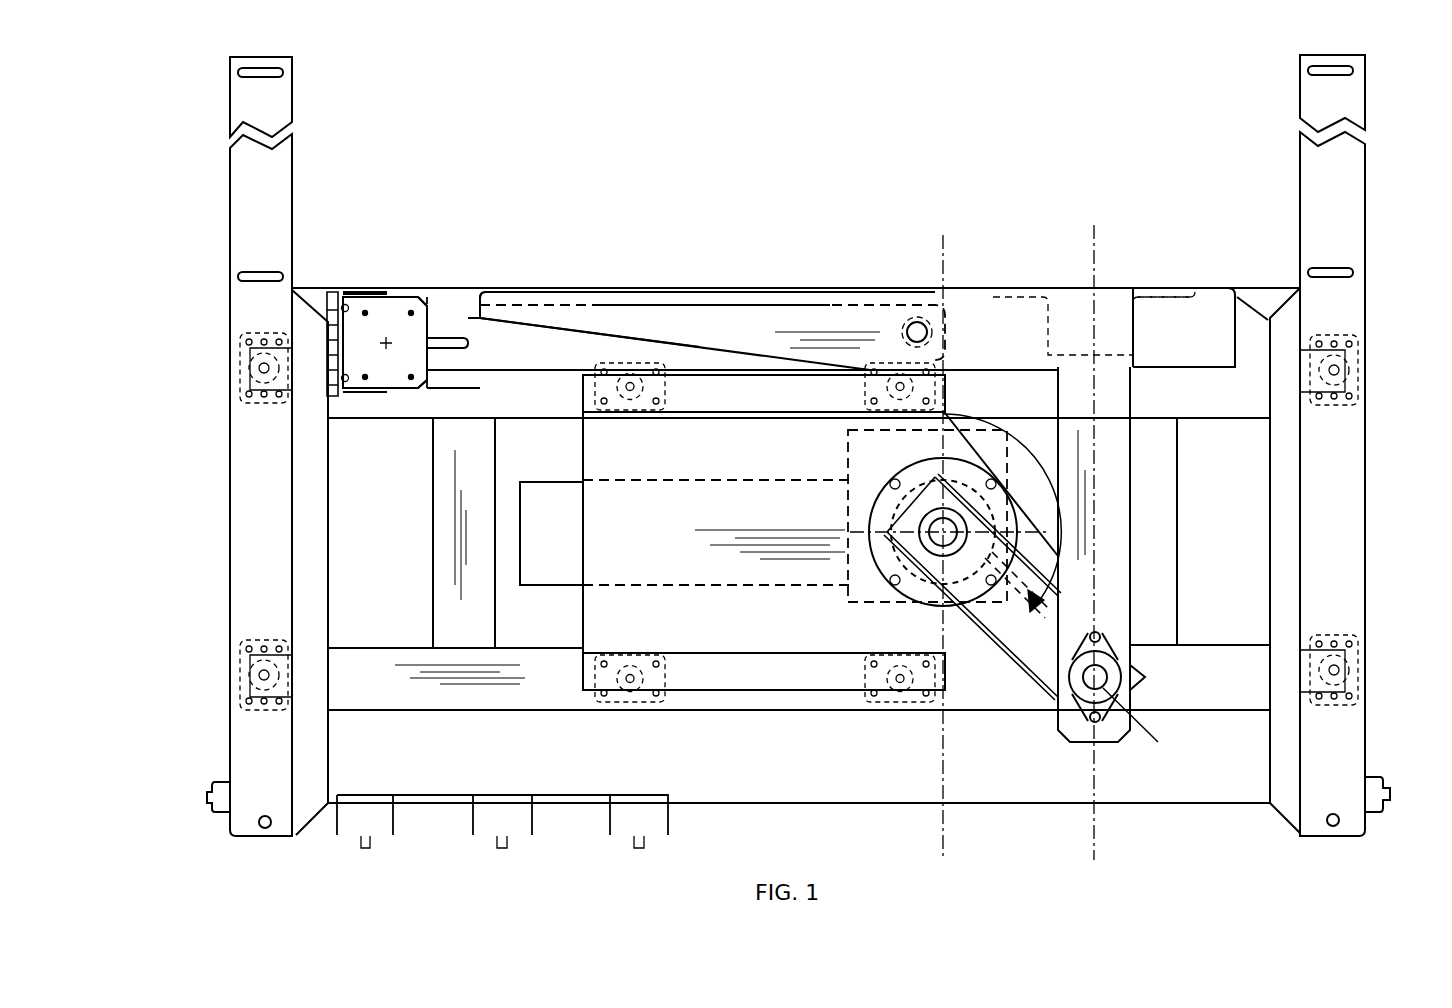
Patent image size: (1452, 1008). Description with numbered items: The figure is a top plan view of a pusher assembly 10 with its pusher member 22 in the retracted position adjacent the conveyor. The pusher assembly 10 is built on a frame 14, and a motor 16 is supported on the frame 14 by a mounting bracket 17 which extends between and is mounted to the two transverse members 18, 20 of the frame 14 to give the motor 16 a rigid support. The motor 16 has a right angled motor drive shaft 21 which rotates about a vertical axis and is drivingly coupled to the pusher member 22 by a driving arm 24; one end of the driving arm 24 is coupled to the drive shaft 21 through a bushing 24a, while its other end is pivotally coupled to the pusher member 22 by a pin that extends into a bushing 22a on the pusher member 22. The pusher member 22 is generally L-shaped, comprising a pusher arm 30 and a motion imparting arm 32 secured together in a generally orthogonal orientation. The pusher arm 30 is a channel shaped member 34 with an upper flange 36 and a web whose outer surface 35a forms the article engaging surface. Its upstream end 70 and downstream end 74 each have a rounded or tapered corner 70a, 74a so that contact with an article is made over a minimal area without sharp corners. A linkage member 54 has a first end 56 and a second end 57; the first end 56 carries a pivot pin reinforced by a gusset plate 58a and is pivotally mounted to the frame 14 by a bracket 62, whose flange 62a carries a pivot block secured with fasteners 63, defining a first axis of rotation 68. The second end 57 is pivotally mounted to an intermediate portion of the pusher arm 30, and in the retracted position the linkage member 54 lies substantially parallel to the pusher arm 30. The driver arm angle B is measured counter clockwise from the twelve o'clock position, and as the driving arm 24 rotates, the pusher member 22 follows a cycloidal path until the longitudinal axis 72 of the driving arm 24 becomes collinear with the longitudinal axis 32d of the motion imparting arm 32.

The pusher assembly 10 is at (852, 217).
The frame 14 is at (1372, 228).
The motor 16 is at (550, 578).
The mounting bracket 17 is at (768, 680).
The transverse member 18 is at (345, 414).
The transverse member 20 is at (383, 690).
The motor drive shaft 21 is at (905, 512).
The pusher member 22 is at (972, 291).
The bushing 22a is at (1105, 655).
The driving arm 24 is at (1012, 648).
The bushing 24a is at (875, 598).
The pusher arm 30 is at (1171, 290).
The motion imparting arm 32 is at (1140, 470).
The longitudinal axis of motion imparting arm 32d is at (1096, 240).
The channel shaped member 34 is at (620, 302).
The outer surface of web 35a is at (715, 303).
The upper flange 36 is at (1200, 350).
The linkage member 54 is at (482, 308).
The first end of linkage member 56 is at (458, 380).
The second end of linkage member 57 is at (870, 302).
The gusset plate 58a is at (455, 345).
The bracket 62 is at (371, 294).
The flange of bracket 62a is at (422, 302).
The fasteners 63 is at (416, 384).
The first axis of rotation 68 is at (385, 343).
The upstream end of pusher arm 70 is at (1238, 320).
The rounded or tapered corner 70a is at (1234, 292).
The longitudinal axis of driver arm 72 is at (1160, 744).
The downstream end of pusher arm 74 is at (552, 303).
The rounded or tapered corner 74a is at (515, 300).
The driver arm angle B is at (1002, 513).